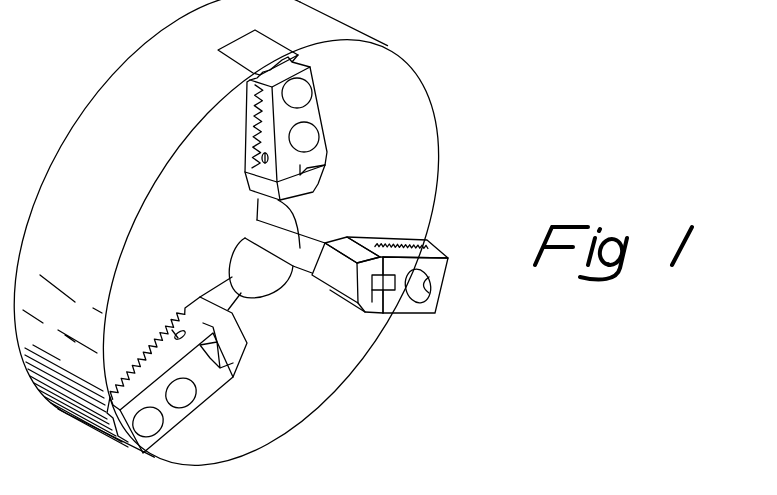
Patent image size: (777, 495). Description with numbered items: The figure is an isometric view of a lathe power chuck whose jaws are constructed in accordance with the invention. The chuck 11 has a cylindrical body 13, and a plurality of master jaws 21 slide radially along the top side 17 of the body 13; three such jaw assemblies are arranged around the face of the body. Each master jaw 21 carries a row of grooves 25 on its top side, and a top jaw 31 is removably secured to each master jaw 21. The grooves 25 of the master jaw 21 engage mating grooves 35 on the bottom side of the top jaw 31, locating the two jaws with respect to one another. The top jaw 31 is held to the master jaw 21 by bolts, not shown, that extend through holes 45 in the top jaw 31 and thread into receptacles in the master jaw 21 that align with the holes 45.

The chuck 11 is at (484, 120).
The cylindrical body 13 is at (350, 373).
The top side 17 is at (420, 185).
The master jaw 21 is at (253, 108).
The row of grooves 25 is at (162, 345).
The top jaw 31 is at (295, 115).
The mating grooves 35 is at (260, 140).
The holes 45 is at (440, 289).